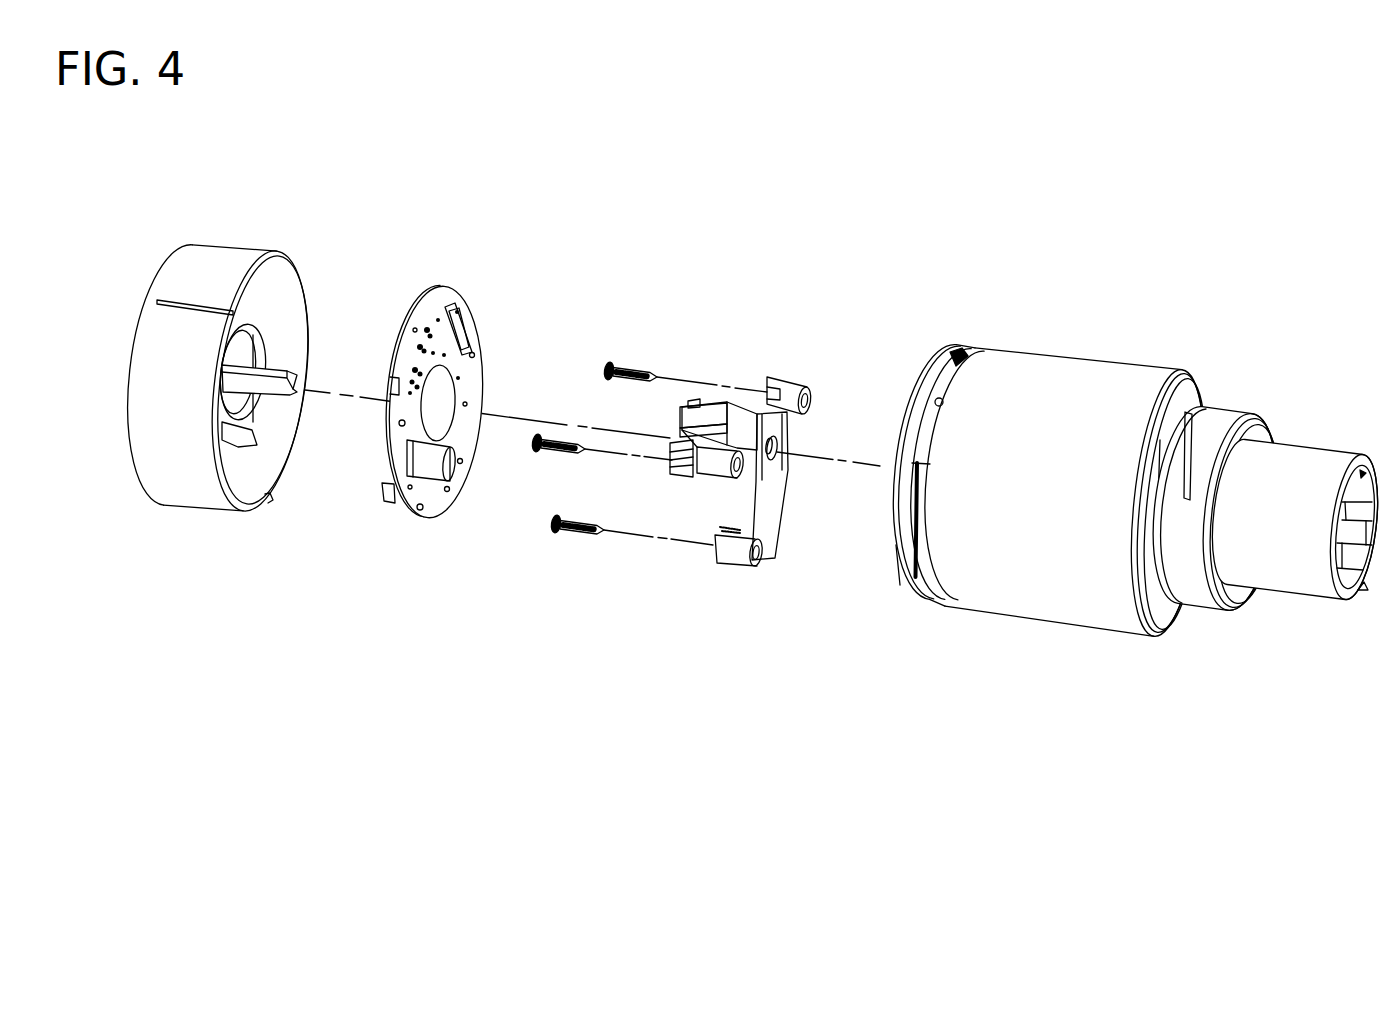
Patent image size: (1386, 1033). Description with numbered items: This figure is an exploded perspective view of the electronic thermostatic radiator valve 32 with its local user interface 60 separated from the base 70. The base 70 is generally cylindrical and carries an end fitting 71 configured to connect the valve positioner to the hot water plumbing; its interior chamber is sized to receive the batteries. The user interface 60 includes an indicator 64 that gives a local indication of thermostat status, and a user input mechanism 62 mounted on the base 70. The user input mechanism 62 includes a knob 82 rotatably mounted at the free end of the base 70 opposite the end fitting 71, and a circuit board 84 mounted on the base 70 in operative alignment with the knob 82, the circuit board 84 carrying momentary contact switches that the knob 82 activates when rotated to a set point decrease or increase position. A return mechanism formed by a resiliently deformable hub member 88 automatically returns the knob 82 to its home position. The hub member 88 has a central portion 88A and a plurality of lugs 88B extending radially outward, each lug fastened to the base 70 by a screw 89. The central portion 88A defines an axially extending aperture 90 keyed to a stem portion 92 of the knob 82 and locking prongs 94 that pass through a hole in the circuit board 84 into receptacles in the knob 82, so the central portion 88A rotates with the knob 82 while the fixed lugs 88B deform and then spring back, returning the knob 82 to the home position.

The radiator valve 32 is at (878, 800).
The user interface 60 is at (997, 326).
The user input mechanism 62 is at (770, 637).
The indicator 64 is at (941, 404).
The base 70 is at (1030, 640).
The end fitting 71 is at (1305, 465).
The knob 82 is at (238, 246).
The circuit board 84 is at (445, 288).
The hub member 88 is at (766, 406).
The central portion 88A is at (740, 416).
The lugs 88B is at (797, 388).
The screw 89 is at (608, 364).
The aperture 90 is at (781, 456).
The stem portion 92 is at (268, 392).
The locking prongs 94 is at (683, 418).